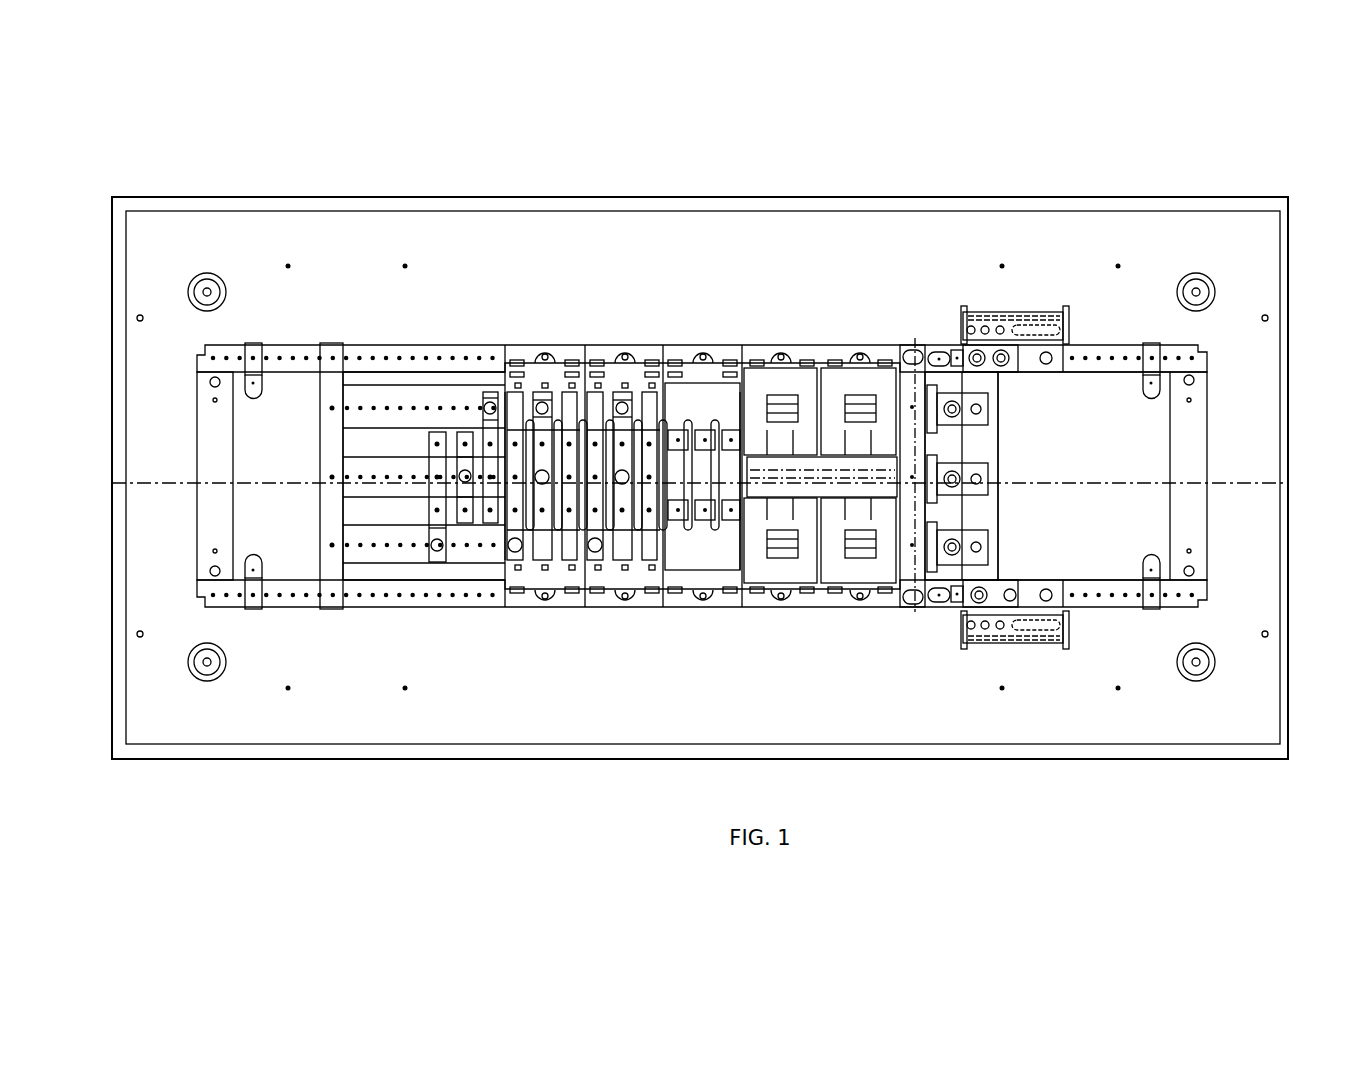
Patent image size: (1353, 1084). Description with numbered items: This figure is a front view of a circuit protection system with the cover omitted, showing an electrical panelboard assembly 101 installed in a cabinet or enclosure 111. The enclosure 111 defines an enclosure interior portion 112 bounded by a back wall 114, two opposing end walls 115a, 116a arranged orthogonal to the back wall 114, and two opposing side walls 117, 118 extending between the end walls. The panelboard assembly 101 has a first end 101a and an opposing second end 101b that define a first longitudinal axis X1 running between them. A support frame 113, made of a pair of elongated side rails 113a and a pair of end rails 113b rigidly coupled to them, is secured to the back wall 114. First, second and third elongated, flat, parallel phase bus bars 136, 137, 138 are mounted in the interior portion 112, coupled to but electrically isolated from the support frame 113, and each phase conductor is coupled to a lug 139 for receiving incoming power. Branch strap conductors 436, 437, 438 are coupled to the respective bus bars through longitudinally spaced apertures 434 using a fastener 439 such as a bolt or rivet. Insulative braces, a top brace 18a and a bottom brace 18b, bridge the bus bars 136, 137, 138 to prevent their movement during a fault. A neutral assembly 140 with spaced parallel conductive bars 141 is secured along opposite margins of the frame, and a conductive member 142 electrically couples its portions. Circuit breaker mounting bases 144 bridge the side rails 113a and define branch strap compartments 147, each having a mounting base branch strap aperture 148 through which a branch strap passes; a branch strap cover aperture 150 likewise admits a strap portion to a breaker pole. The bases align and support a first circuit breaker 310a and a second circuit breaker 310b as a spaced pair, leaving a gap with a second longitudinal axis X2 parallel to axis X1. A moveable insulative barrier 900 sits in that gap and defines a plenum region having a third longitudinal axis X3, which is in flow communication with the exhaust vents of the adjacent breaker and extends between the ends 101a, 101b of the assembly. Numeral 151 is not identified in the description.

The enclosure 111 is at (993, 192).
The enclosure interior portion 112 is at (823, 262).
The support frame 113 is at (702, 482).
The side rails 113a is at (405, 598).
The end rails 113b is at (413, 356).
The back wall 114 is at (723, 242).
The end wall 115a is at (1280, 330).
The end wall 116a is at (112, 390).
The side wall 117 is at (1083, 197).
The side wall 118 is at (1090, 760).
The panelboard assembly 101 is at (497, 308).
The first end 101a is at (1150, 420).
The second end 101b is at (248, 452).
The first bus bar 136 is at (455, 415).
The second bus bar 137 is at (385, 490).
The third bus bar 138 is at (340, 607).
The lug 139 is at (988, 412).
The neutral assembly 140 is at (1046, 364).
The conductive bars 141 is at (1040, 312).
The conductive member 142 is at (1003, 476).
The circuit breaker mounting base 144 is at (699, 447).
The branch strap compartments 147 is at (562, 392).
The mounting base branch strap aperture 148 is at (495, 392).
The branch strap cover aperture 150 is at (688, 420).
The breaker housing 151 is at (814, 474).
The top brace 18a is at (925, 515).
The bottom brace 18b is at (325, 500).
The first circuit breaker 310a is at (840, 590).
The second circuit breaker 310b is at (805, 392).
The apertures 434 is at (345, 408).
The branch strap conductor 436 is at (500, 392).
The branch strap conductor 437 is at (408, 386).
The branch strap conductor 438 is at (437, 444).
The fastener 439 is at (470, 525).
The insulative barrier 900 is at (850, 590).
The first longitudinal axis X1 is at (1095, 483).
The second longitudinal axis X2 is at (916, 345).
The third longitudinal axis X3 is at (915, 612).